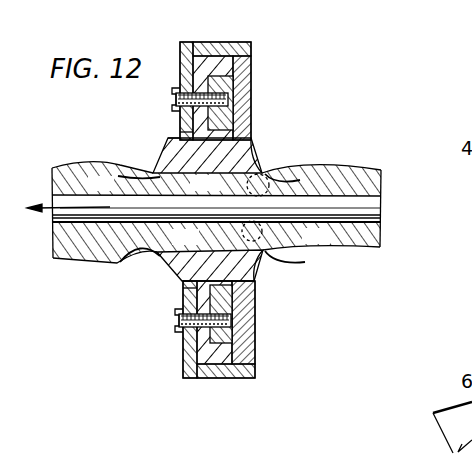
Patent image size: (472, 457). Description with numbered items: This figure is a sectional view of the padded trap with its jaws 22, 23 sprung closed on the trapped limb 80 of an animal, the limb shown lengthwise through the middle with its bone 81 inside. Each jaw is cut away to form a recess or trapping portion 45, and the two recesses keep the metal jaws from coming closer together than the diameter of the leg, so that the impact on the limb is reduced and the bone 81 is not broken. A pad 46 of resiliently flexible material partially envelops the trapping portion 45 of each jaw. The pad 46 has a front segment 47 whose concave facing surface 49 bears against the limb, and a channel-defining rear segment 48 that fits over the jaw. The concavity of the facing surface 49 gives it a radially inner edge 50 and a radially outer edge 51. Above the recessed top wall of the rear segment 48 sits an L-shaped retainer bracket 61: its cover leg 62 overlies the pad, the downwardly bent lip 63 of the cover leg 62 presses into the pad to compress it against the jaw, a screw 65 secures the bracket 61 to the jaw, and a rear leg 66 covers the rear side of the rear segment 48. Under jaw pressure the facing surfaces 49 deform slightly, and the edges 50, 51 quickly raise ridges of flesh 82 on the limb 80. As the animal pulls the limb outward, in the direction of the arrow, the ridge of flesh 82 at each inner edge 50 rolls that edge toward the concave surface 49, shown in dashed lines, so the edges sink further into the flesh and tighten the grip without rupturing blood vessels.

The jaw 22 is at (220, 379).
The jaw 23 is at (236, 42).
The trapping portion 45 is at (258, 155).
The pad 46 is at (221, 215).
The front segment 47 is at (168, 148).
The rear segment 48 is at (243, 100).
The facing surface 49 is at (268, 168).
The radially inner edge 50 is at (226, 186).
The radially outer edge 51 is at (122, 179).
The retainer bracket 61 is at (182, 43).
The cover leg 62 is at (181, 62).
The lip 63 is at (180, 132).
The screw 65 is at (172, 97).
The rear leg 66 is at (208, 42).
The trapped limb 80 is at (381, 239).
The bone 81 is at (383, 202).
The ridge of flesh 82 is at (153, 165).